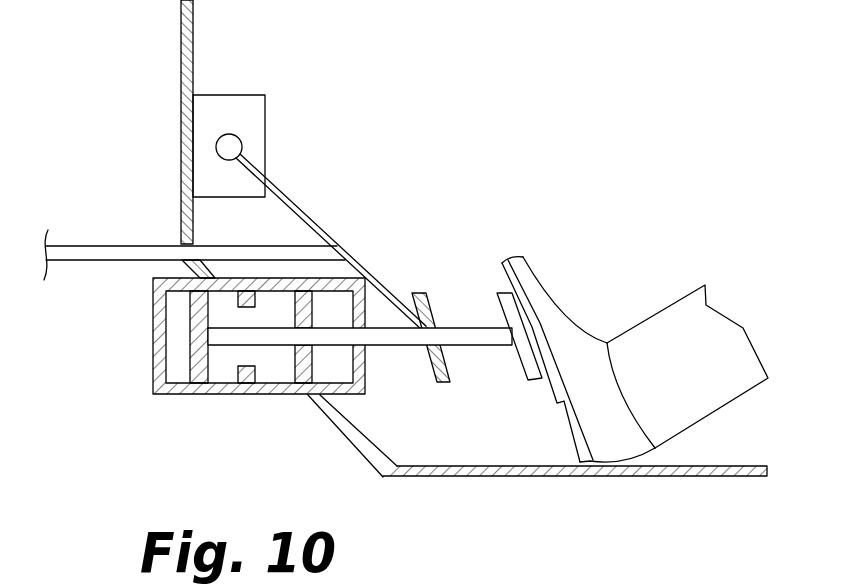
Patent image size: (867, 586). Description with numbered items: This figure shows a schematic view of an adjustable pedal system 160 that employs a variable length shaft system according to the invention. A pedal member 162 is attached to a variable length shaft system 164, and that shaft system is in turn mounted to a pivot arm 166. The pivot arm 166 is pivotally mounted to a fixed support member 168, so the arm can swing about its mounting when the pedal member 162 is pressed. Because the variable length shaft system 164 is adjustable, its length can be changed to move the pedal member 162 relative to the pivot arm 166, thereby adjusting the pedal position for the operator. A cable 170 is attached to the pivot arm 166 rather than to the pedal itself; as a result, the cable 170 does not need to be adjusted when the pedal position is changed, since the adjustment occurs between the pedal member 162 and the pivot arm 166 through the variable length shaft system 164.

The adjustable pedal system 160 is at (403, 185).
The pedal member 162 is at (510, 304).
The variable length shaft system 164 is at (247, 380).
The pivot arm 166 is at (312, 228).
The fixed support member 168 is at (240, 108).
The cable 170 is at (118, 261).